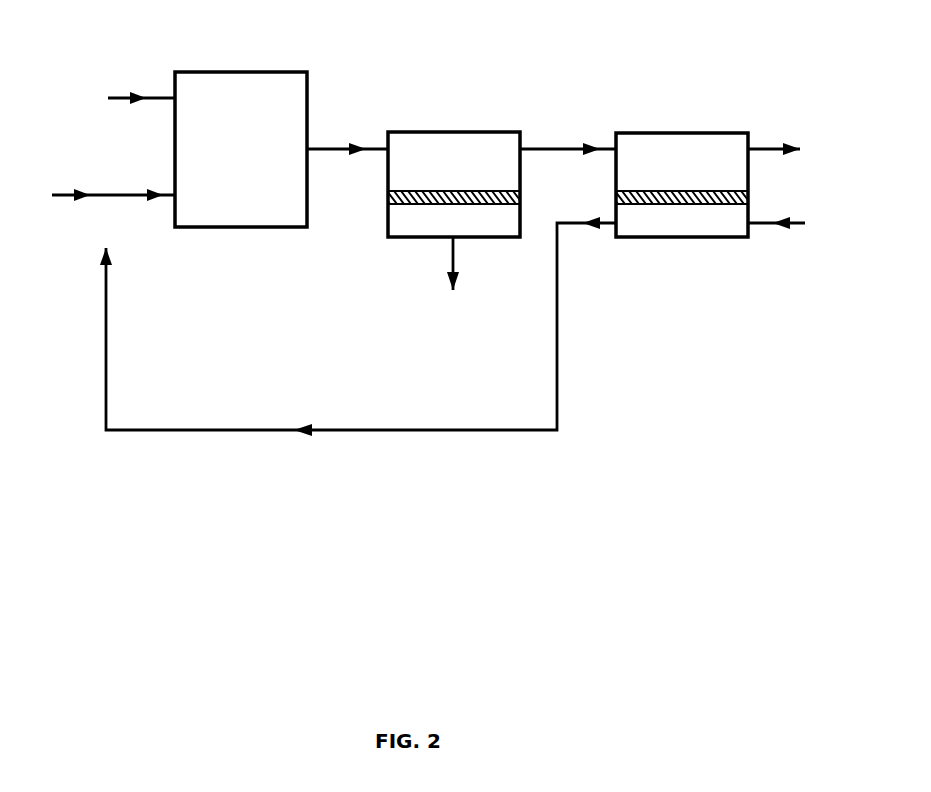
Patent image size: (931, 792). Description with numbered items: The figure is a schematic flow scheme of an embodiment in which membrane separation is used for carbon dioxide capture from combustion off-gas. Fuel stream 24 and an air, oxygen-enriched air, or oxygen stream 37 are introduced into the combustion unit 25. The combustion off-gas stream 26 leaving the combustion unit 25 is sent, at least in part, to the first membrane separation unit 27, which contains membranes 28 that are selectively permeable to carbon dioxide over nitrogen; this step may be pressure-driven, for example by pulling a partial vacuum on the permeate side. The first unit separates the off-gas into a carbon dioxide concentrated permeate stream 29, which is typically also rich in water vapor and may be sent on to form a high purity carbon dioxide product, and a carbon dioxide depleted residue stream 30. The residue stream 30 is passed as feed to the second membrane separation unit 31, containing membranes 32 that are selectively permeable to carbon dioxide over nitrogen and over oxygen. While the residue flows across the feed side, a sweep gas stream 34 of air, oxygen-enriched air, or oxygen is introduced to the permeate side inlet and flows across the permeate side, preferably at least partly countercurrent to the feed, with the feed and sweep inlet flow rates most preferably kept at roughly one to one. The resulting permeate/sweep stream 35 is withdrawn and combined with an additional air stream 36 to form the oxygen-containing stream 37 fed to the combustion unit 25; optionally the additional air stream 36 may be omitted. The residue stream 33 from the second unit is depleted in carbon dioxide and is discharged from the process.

The fuel stream 24 is at (130, 89).
The combustion unit 25 is at (203, 72).
The combustion off-gas stream 26 is at (347, 140).
The first membrane separation unit 27 is at (488, 132).
The membranes 28 is at (432, 191).
The carbon dioxide concentrated permeate stream 29 is at (453, 278).
The carbon dioxide depleted residue stream 30 is at (568, 140).
The second membrane separation unit 31 is at (718, 133).
The membranes 32 is at (668, 191).
The residue stream 33 is at (787, 149).
The sweep gas stream 34 is at (786, 223).
The permeate/sweep stream 35 is at (358, 326).
The additional air stream 36 is at (72, 186).
The air, oxygen-enriched air, or oxygen stream 37 is at (140, 186).